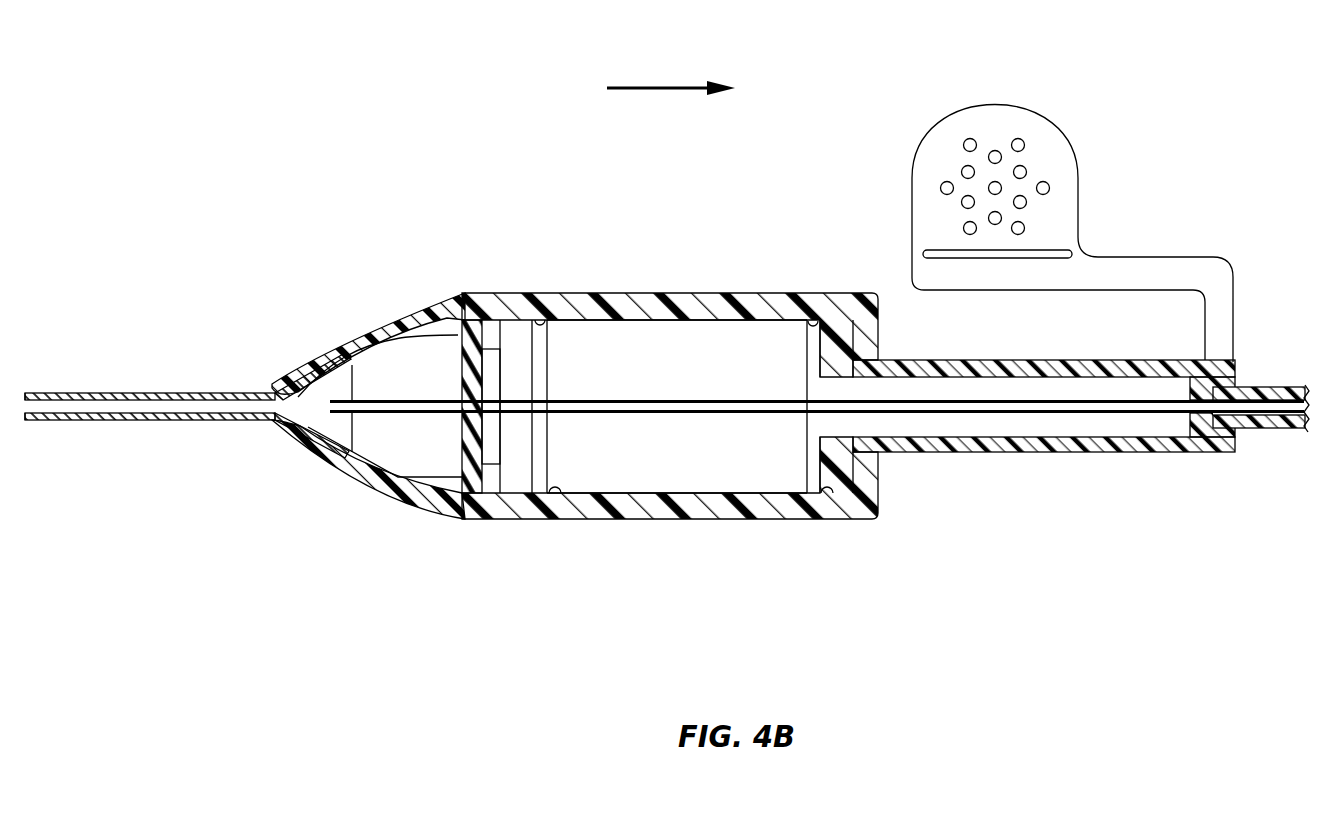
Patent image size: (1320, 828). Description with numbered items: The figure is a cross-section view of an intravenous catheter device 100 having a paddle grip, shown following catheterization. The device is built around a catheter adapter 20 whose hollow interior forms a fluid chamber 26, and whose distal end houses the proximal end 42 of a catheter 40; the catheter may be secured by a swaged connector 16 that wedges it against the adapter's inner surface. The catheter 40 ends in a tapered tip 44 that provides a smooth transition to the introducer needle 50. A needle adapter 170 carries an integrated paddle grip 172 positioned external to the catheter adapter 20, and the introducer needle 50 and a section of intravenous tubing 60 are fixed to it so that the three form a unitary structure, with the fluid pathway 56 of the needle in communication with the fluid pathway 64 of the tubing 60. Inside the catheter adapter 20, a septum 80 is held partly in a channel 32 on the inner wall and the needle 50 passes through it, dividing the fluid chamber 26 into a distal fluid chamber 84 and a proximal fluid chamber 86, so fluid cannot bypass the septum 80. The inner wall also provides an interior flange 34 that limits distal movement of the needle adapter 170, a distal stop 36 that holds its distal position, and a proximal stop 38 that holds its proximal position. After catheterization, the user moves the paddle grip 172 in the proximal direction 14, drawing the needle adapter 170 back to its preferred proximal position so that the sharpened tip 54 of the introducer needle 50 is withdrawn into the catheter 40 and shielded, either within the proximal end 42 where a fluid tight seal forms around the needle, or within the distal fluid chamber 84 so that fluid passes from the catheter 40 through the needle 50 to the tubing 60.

The intravenous catheter device 100 is at (336, 194).
The proximal direction 14 is at (653, 88).
The paddle grip 172 is at (1078, 168).
The catheter adapter 20 is at (635, 520).
The fluid chamber 26 is at (753, 333).
The proximal fluid chamber 86 is at (747, 480).
The proximal stop 38 is at (845, 484).
The introducer needle 50 is at (937, 437).
The needle adapter 170 is at (1133, 453).
The intravenous tubing 60 is at (1280, 428).
The fluid pathway 56 is at (1018, 388).
The fluid pathway 64 is at (1265, 405).
The catheter 40 is at (145, 392).
The tip 44 is at (32, 421).
The proximal end 42 is at (307, 352).
The sharpened tip 54 is at (312, 436).
The swaged connector 16 is at (363, 380).
The septum 80 is at (455, 380).
The distal fluid chamber 84 is at (398, 445).
The channel 32 is at (462, 495).
The interior flange 34 is at (490, 468).
The distal stop 36 is at (556, 488).